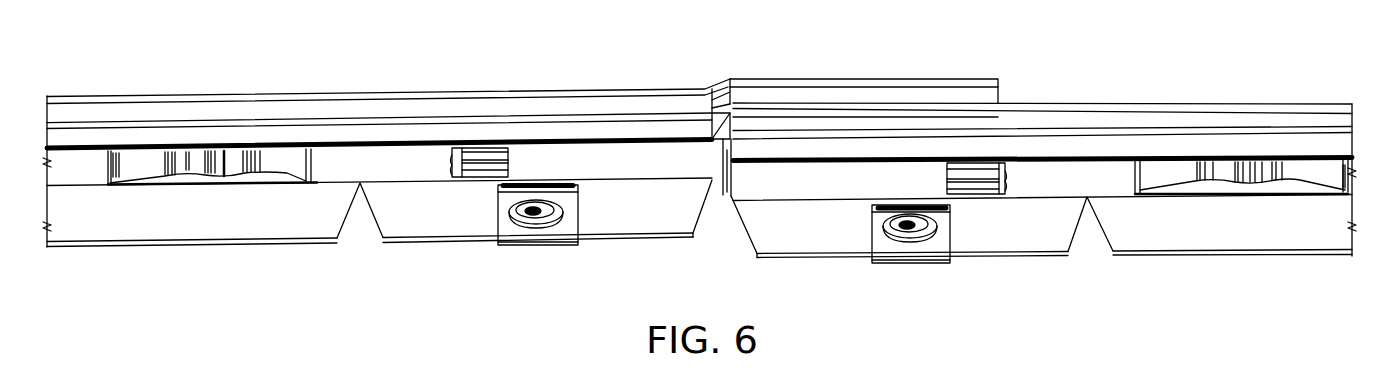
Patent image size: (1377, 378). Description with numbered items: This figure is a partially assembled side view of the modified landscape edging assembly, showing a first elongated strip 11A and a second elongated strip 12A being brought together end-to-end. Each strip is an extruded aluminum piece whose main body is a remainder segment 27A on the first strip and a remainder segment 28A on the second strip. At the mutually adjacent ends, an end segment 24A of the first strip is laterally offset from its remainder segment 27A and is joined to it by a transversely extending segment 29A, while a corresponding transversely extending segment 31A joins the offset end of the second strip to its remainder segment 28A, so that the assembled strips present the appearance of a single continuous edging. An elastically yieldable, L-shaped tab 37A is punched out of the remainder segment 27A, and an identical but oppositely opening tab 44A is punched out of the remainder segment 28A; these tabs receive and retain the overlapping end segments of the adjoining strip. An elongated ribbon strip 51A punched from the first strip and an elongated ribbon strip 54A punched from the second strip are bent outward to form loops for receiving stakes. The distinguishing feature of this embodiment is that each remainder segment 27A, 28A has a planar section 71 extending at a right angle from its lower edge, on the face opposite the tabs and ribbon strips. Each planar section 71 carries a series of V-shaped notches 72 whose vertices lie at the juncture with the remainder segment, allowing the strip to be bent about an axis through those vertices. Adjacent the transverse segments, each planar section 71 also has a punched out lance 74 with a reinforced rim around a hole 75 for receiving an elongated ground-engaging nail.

The first elongated strip 11A is at (549, 91).
The second elongated strip 12A is at (1104, 106).
The end segment 24A is at (848, 79).
The remainder segment 27A is at (289, 93).
The remainder segment 28A is at (1215, 105).
The transversely extending segment 29A is at (731, 78).
The transversely extending segment 31A is at (724, 197).
The tab 37A is at (477, 146).
The tab 44A is at (979, 194).
The elongated ribbon strip 51A is at (148, 158).
The elongated ribbon strip 54A is at (1304, 170).
The planar section 71 is at (301, 219).
The V-shaped notches 72 is at (362, 220).
The punched out lance 74 is at (558, 236).
The hole 75 is at (547, 228).